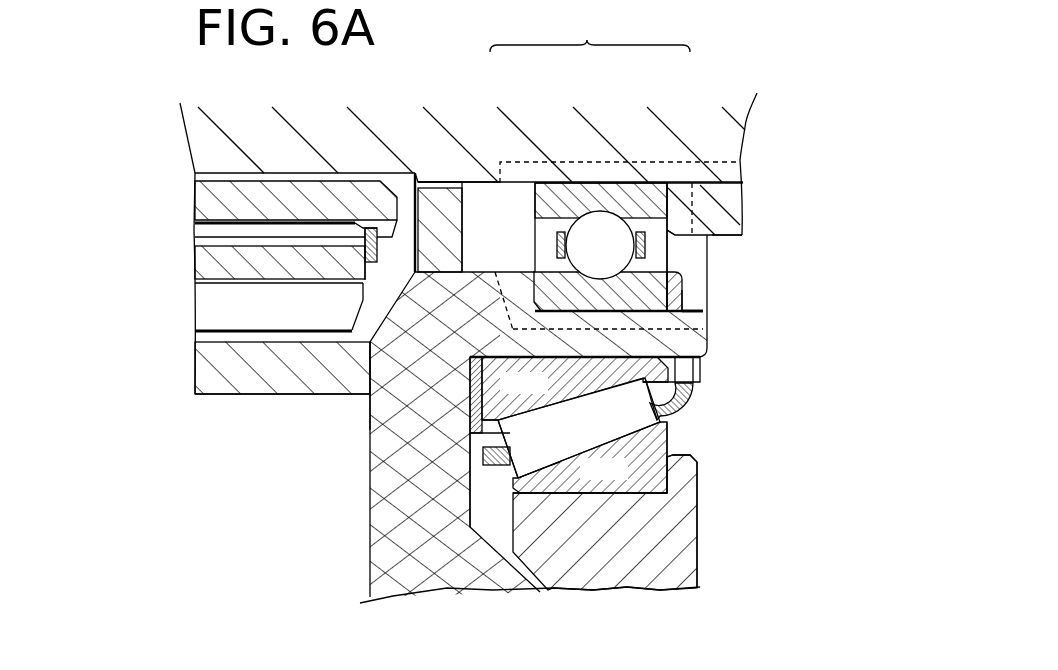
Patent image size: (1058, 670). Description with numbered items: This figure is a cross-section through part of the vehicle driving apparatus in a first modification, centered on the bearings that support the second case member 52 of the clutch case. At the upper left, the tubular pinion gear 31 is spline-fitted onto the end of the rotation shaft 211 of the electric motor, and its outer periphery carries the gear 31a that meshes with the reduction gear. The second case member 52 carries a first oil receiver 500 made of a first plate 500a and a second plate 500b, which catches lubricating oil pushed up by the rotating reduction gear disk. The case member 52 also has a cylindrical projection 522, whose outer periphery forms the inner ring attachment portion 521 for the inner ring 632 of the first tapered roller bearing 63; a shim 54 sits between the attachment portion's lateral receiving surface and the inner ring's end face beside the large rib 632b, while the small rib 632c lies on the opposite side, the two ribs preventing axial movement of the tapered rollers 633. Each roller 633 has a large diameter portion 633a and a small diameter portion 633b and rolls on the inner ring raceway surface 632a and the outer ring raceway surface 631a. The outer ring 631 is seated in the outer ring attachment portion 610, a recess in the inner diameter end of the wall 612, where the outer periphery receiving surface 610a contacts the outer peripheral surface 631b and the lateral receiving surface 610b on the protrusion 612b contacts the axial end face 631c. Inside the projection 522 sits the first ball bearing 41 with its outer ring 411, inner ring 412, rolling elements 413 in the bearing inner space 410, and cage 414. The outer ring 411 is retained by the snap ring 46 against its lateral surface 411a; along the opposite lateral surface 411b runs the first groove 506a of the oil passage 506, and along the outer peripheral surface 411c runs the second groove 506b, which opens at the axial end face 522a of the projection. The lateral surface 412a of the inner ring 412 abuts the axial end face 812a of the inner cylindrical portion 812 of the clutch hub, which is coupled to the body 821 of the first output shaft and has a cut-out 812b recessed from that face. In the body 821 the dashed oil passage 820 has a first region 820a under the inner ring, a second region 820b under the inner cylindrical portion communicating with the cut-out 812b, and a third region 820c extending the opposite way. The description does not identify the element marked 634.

The oil passage 820 is at (495, 162).
The third region 820c is at (515, 173).
The first region 820a is at (648, 166).
The second region 820b is at (688, 175).
The body 821 is at (727, 129).
The inner cylindrical portion 812 is at (730, 200).
The axial end face 812a is at (700, 183).
The cut-out 812b is at (682, 222).
The lateral surface 412a is at (705, 183).
The snap ring 46 is at (741, 246).
The rotation shaft 211 is at (210, 198).
The pinion gear 31 is at (205, 263).
The gear 31a is at (208, 303).
The first oil receiver 500 is at (237, 422).
The first plate 500a is at (215, 400).
The second plate 500b is at (228, 362).
The oil passage 506 is at (513, 270).
The first groove 506a is at (370, 393).
The second groove 506b is at (710, 313).
The bearing inner space 410 is at (535, 230).
The first ball bearing 41 is at (590, 98).
The outer ring 411 is at (552, 287).
The lateral surface 411a is at (683, 290).
The lateral surface 411b is at (370, 417).
The outer peripheral surface 411c is at (682, 303).
The inner ring 412 is at (630, 190).
The rolling elements 413 is at (601, 250).
The cage 414 is at (560, 290).
The inner ring attachment portion 521 is at (712, 358).
The projection 522 is at (707, 341).
The axial end face 522a is at (710, 333).
The first tapered roller bearing 63 is at (507, 500).
The outer ring 631 is at (626, 481).
The outer ring raceway surface 631a is at (552, 450).
The outer peripheral surface 631b is at (600, 480).
The axial end face 631c is at (667, 472).
The inner ring 632 is at (546, 394).
The inner ring raceway surface 632a is at (683, 430).
The large rib 632b is at (482, 458).
The small rib 632c is at (693, 385).
The tapered roller 633 is at (580, 440).
The large diameter portion 633a is at (515, 480).
The small diameter portion 633b is at (685, 412).
The seal groove 634 is at (372, 572).
The second case member 52 is at (370, 515).
The shim 54 is at (370, 480).
The outer ring attachment portion 610 is at (640, 512).
The outer periphery receiving surface 610a is at (640, 493).
The lateral receiving surface 610b is at (657, 490).
The wall 612 is at (687, 567).
The protrusion 612b is at (697, 460).